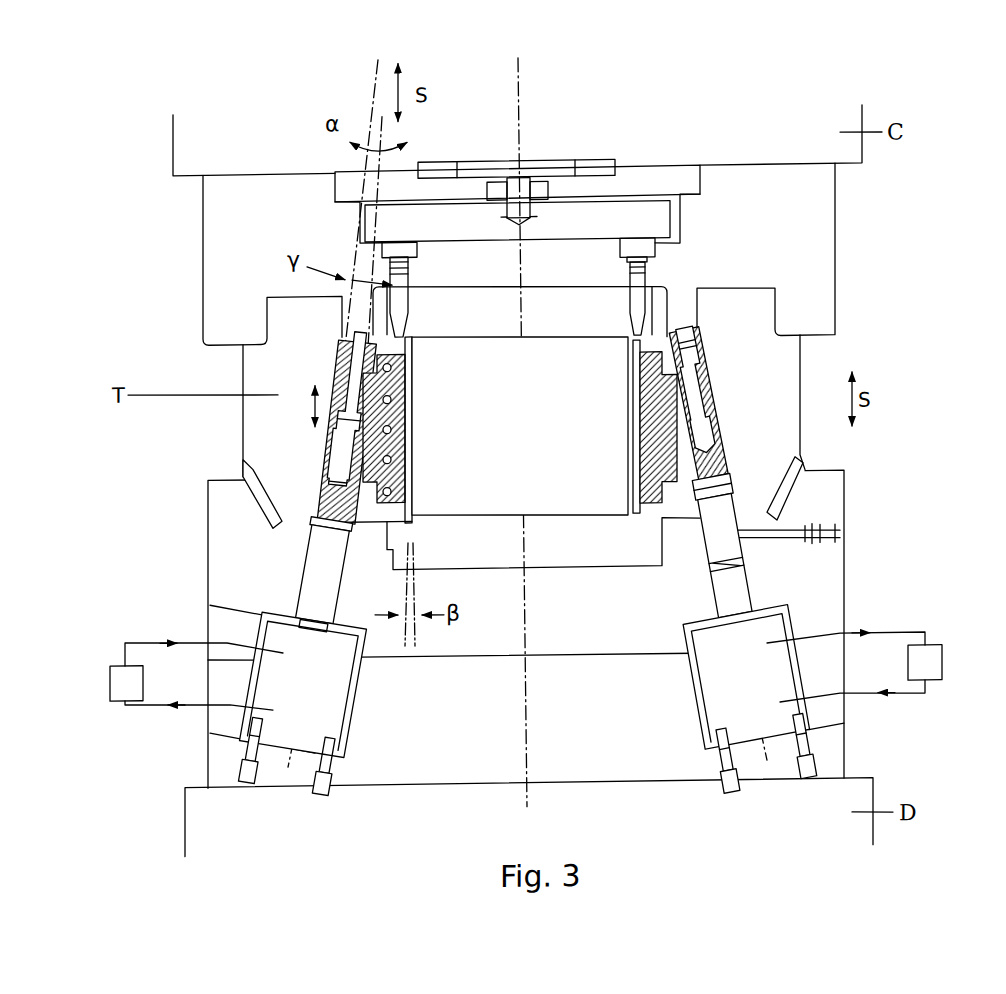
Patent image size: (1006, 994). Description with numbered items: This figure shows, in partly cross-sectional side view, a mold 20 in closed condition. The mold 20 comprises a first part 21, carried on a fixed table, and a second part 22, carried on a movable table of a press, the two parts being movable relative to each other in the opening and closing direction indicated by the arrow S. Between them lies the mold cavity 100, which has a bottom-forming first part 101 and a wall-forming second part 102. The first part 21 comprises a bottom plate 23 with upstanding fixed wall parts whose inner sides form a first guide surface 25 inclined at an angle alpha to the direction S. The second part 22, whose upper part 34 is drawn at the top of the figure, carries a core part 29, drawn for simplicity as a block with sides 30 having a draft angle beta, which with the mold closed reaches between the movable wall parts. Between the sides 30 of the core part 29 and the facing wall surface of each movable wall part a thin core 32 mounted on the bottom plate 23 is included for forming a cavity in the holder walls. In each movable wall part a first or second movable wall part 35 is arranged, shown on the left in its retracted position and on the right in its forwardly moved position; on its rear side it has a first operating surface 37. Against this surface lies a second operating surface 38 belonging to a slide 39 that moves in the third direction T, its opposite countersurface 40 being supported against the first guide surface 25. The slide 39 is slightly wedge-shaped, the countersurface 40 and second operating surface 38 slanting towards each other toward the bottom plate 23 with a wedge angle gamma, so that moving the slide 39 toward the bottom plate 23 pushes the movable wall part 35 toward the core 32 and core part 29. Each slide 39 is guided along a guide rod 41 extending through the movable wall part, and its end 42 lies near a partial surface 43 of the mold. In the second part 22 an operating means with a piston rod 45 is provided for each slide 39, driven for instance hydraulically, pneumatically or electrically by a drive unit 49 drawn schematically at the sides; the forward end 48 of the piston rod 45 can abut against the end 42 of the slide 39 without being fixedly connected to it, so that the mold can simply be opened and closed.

The mold 20 is at (865, 195).
The first part 21 is at (868, 253).
The second part 22 is at (878, 755).
The bottom plate 23 is at (232, 264).
The first guide surface 25 is at (352, 345).
The core part 29 is at (537, 514).
The sides 30 is at (413, 386).
The core 32 is at (407, 415).
The punch holder 34 is at (653, 150).
The first or second movable wall part 35 is at (395, 475).
The first operating surface 37 is at (395, 441).
The second operating surface 38 is at (357, 505).
The slide 39 is at (322, 475).
The countersurface 40 is at (232, 415).
The guide rod 41 is at (350, 383).
The end 42 is at (313, 502).
The partial surface 43 is at (795, 509).
The piston rod 45 is at (522, 634).
The forward end 48 is at (323, 519).
The hydraulic drive unit 49 is at (120, 680).
The mold cavity 100 is at (570, 328).
The first part 101 is at (477, 335).
The second part 102 is at (628, 414).